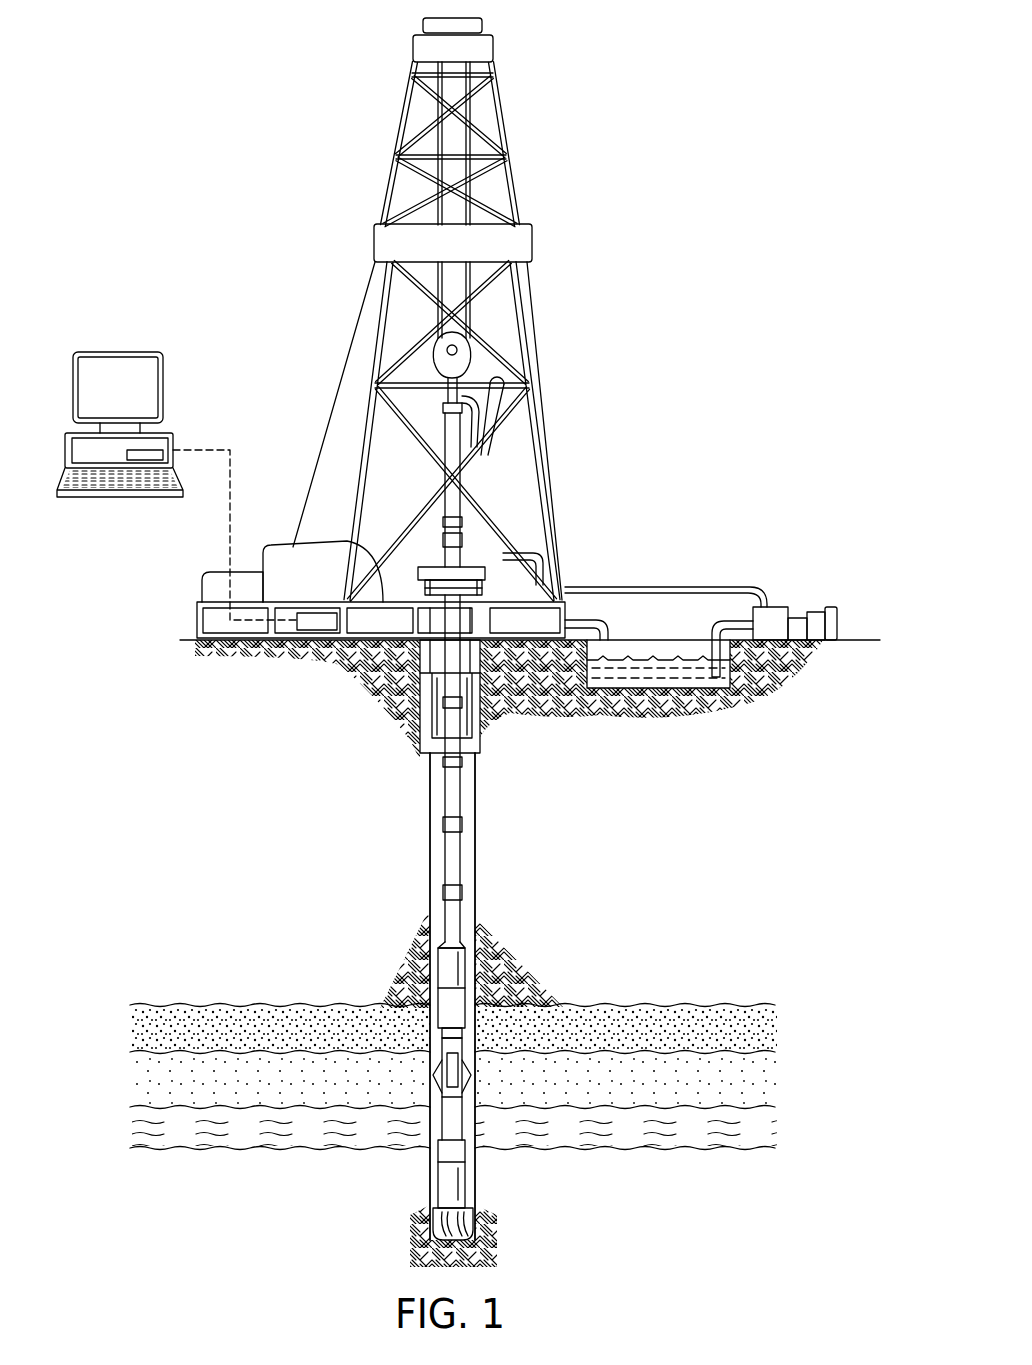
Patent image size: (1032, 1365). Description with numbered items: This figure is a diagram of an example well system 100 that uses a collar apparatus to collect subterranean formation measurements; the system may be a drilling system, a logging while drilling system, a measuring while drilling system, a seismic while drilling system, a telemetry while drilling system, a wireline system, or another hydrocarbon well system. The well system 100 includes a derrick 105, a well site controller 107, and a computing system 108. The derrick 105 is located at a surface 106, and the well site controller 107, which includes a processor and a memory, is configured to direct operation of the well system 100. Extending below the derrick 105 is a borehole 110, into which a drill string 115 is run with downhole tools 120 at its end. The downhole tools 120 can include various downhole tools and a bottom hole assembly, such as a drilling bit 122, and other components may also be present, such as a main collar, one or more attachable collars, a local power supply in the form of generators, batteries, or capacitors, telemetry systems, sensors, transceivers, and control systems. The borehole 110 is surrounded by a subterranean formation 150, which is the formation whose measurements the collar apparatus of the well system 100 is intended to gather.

The well system 100 is at (233, 123).
The derrick 105 is at (528, 323).
The surface 106 is at (860, 638).
The well site controller 107 is at (318, 632).
The computing system 108 is at (120, 350).
The borehole 110 is at (438, 853).
The drill string 115 is at (462, 863).
The downhole tools 120 is at (518, 1140).
The drilling bit 122 is at (430, 1220).
The subterranean formation 150 is at (792, 1089).